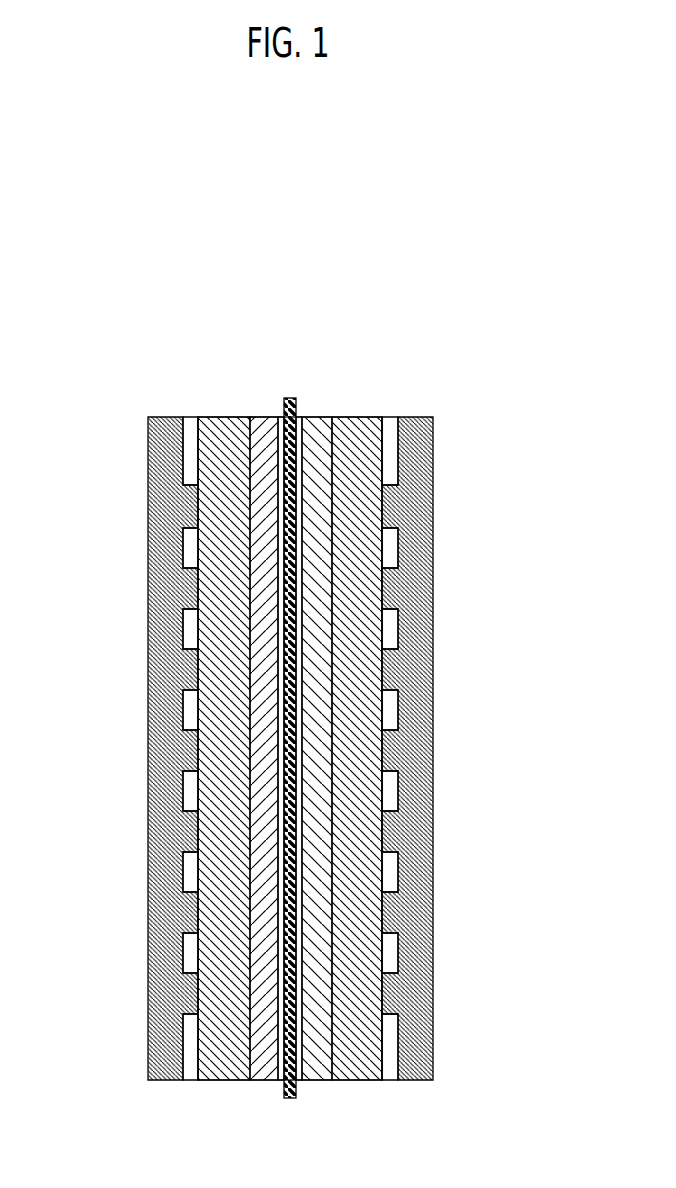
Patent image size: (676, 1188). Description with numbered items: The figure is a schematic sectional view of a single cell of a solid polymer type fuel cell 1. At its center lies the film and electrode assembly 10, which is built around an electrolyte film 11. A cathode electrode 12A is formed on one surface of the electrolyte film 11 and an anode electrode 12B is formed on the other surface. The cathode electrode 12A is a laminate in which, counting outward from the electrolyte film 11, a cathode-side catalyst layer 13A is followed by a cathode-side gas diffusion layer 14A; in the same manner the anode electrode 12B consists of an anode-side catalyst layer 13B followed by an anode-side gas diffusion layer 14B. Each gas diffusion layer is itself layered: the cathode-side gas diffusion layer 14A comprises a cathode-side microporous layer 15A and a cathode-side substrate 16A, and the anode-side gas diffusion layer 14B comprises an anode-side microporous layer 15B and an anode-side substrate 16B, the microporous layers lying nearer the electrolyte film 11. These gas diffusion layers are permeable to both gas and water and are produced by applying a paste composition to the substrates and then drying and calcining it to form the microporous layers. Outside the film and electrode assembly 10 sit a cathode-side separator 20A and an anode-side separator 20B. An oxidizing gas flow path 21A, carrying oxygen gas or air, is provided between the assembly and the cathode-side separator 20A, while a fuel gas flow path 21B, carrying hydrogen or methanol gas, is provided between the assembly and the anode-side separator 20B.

The solid polymer type fuel cell 1 is at (470, 1047).
The film and electrode assembly 10 is at (195, 259).
The electrolyte film 11 is at (287, 1100).
The cathode electrode 12A is at (423, 308).
The anode electrode 12B is at (283, 308).
The cathode-side catalyst layer 13A is at (300, 417).
The anode-side catalyst layer 13B is at (281, 417).
The cathode-side gas diffusion layer 14A is at (453, 355).
The anode-side gas diffusion layer 14B is at (238, 355).
The cathode-side microporous layer 15A is at (318, 418).
The anode-side microporous layer 15B is at (258, 418).
The cathode-side substrate 16A is at (360, 418).
The anode-side substrate 16B is at (218, 418).
The cathode-side separator 20A is at (418, 752).
The anode-side separator 20B is at (150, 752).
The oxidizing gas flow path 21A is at (388, 552).
The fuel gas flow path 21B is at (190, 553).